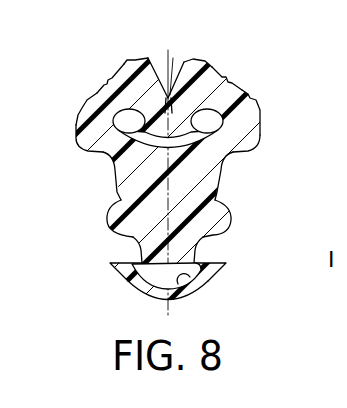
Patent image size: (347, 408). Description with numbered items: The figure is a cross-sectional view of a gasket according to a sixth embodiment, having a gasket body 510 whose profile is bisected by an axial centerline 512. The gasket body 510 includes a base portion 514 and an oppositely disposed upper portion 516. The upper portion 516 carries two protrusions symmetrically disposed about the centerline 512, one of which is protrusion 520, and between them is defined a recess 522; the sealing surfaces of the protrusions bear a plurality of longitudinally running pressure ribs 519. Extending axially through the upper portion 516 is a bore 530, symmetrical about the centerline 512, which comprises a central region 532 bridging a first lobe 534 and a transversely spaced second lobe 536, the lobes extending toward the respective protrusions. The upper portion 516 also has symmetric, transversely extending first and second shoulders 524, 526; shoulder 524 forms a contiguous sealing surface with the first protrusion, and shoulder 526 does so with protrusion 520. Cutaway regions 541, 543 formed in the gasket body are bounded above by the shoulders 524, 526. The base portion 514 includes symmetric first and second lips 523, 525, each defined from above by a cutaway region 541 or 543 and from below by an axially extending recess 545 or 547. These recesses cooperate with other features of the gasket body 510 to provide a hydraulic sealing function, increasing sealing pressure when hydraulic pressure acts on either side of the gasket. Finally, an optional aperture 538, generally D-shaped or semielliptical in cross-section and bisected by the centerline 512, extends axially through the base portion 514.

The gasket body 510 is at (86, 224).
The axial centerline 512 is at (163, 312).
The base portion 514 is at (135, 287).
The upper portion 516 is at (78, 122).
The pressure ribs 519 is at (124, 62).
The protrusion 520 is at (192, 60).
The recess 522 is at (166, 62).
The first lip 523 is at (110, 216).
The first shoulder 524 is at (75, 134).
The second lip 525 is at (229, 215).
The second shoulder 526 is at (262, 135).
The bore 530 is at (232, 176).
The central region 532 is at (172, 66).
The first lobe 534 is at (118, 70).
The second lobe 536 is at (258, 117).
The aperture 538 is at (207, 275).
The cutaway region 541 is at (110, 163).
The cutaway region 543 is at (228, 157).
The axially extending recess 545 is at (118, 256).
The axially extending recess 547 is at (222, 254).